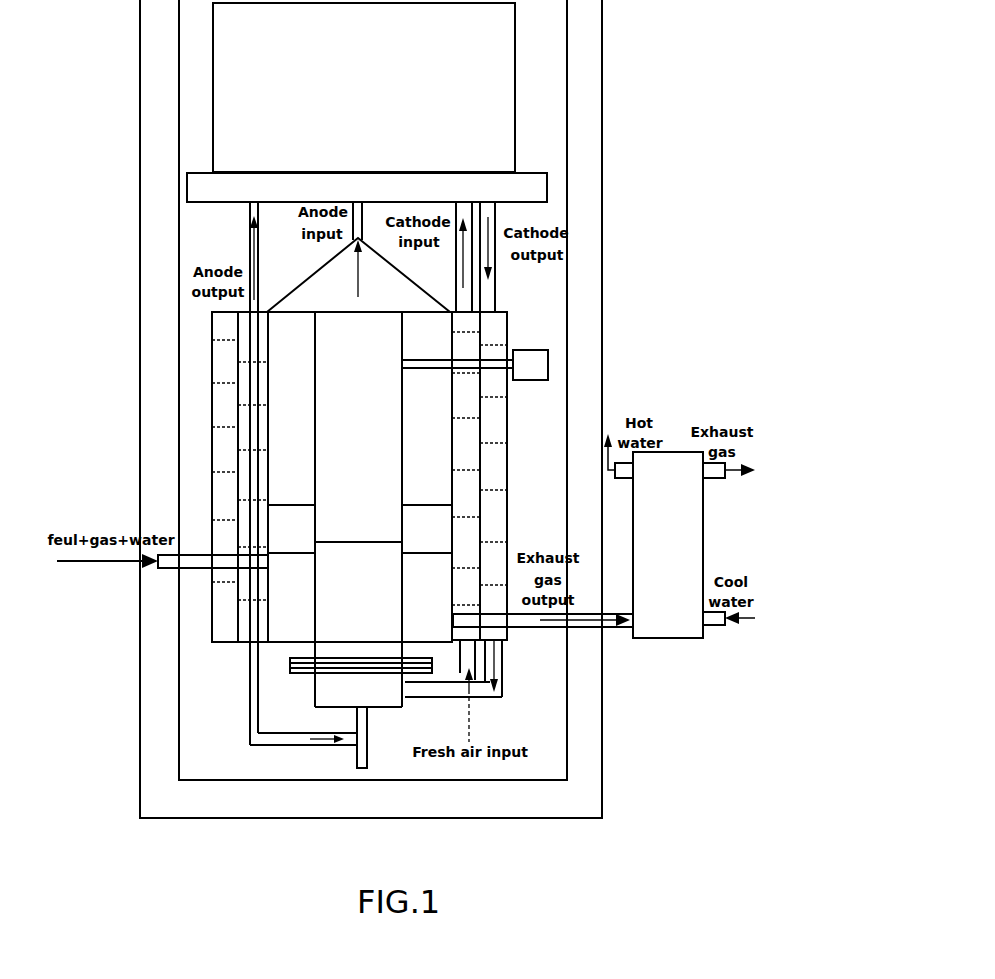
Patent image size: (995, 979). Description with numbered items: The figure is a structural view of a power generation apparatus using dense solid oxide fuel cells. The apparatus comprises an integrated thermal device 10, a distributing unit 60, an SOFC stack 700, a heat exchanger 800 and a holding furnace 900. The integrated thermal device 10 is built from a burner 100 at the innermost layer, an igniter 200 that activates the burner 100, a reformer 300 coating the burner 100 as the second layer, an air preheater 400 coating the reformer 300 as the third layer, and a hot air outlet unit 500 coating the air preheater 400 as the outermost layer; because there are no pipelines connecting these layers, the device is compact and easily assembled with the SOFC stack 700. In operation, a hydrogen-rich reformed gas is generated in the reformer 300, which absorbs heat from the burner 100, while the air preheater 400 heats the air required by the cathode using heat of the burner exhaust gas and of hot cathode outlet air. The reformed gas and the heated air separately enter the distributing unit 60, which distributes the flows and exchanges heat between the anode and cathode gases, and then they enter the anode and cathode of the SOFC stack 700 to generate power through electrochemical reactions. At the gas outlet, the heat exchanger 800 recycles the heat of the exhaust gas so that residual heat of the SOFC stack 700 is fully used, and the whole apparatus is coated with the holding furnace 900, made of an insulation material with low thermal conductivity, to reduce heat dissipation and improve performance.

The integrated thermal device 10 is at (200, 235).
The distributing unit 60 is at (202, 188).
The burner 100 is at (343, 493).
The igniter 200 is at (527, 365).
The reformer 300 is at (285, 440).
The air preheater 400 is at (465, 438).
The hot air outlet unit 500 is at (225, 362).
The SOFC stack 700 is at (475, 75).
The heat exchanger 800 is at (662, 640).
The holding furnace 900 is at (602, 200).